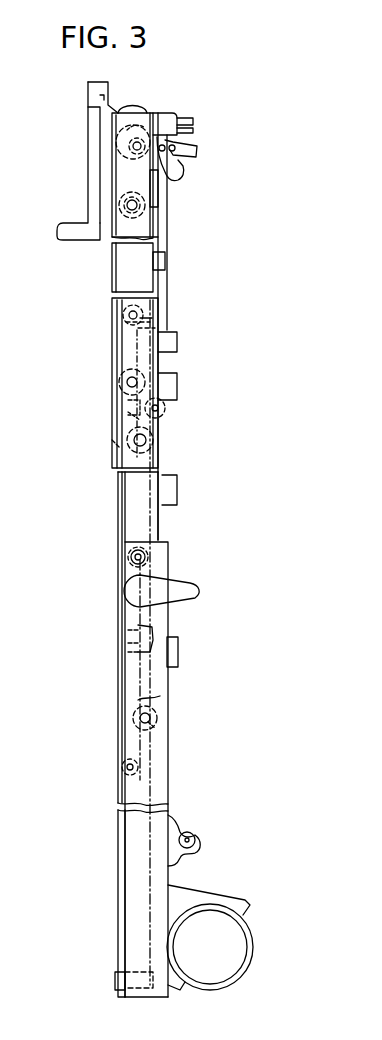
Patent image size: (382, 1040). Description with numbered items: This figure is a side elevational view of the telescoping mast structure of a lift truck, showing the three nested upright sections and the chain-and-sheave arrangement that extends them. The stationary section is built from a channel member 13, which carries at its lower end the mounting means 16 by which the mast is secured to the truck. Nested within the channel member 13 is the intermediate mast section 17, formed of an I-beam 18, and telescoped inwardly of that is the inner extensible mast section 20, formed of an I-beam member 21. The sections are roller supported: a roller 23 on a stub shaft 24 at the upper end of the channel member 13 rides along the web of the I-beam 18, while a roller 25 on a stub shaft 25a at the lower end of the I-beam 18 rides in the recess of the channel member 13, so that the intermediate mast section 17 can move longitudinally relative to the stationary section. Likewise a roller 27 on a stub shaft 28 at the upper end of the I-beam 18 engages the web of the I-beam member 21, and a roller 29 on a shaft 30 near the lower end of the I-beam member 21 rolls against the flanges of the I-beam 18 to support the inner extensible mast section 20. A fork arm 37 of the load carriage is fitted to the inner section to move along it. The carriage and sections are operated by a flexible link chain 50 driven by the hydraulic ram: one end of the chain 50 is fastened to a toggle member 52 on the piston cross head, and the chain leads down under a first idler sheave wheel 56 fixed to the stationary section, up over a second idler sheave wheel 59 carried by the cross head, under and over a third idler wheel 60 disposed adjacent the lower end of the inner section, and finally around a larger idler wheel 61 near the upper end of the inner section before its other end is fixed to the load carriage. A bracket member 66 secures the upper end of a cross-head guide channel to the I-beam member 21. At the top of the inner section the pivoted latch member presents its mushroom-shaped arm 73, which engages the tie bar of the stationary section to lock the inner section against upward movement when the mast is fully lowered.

The channel member 13 is at (162, 778).
The mounting means 16 is at (216, 900).
The intermediate mast section 17 is at (111, 526).
The I-beam 18 is at (120, 505).
The inner extensible mast section 20 is at (108, 256).
The I-beam member 21 is at (112, 273).
The roller 23 is at (150, 556).
The stub shaft 24 is at (133, 559).
The roller 25 is at (158, 716).
The stub shaft 25a is at (158, 730).
The roller 27 is at (165, 305).
The stub shaft 28 is at (160, 318).
The roller 29 is at (152, 440).
The shaft 30 is at (118, 448).
The fork arm 37 is at (63, 228).
The flexible link chain 50 is at (165, 240).
The toggle member 52 is at (135, 415).
The first idler sheave wheel 56 is at (122, 772).
The second idler sheave wheel 59 is at (122, 382).
The third idler wheel 60 is at (165, 408).
The larger idler wheel 61 is at (118, 142).
The bracket member 66 is at (160, 204).
The arm 73 is at (180, 178).